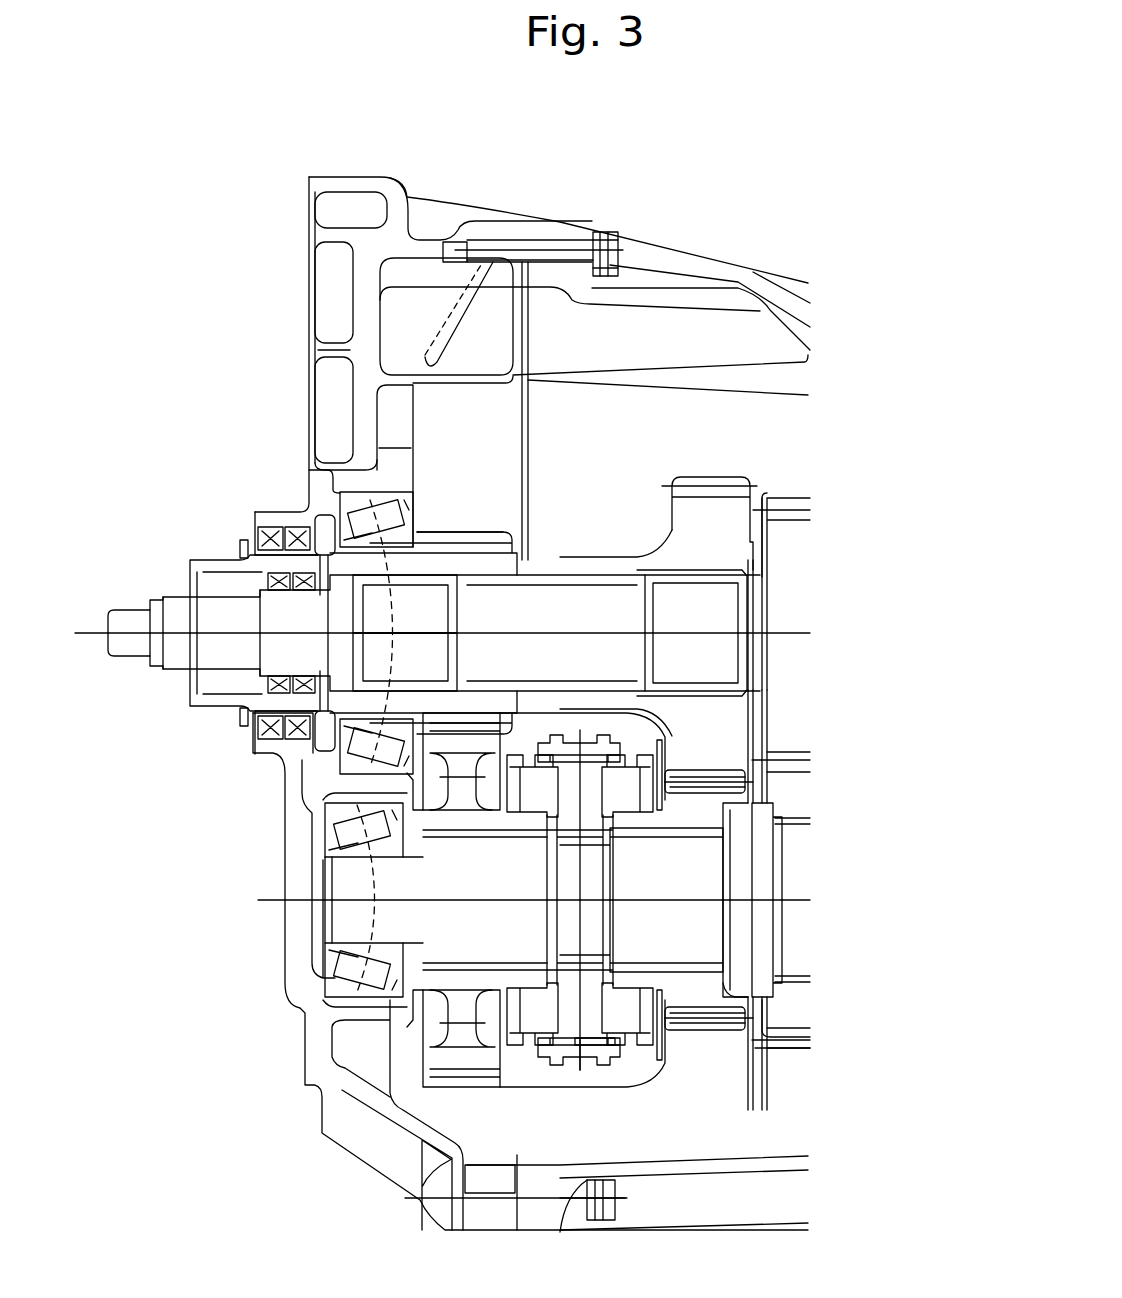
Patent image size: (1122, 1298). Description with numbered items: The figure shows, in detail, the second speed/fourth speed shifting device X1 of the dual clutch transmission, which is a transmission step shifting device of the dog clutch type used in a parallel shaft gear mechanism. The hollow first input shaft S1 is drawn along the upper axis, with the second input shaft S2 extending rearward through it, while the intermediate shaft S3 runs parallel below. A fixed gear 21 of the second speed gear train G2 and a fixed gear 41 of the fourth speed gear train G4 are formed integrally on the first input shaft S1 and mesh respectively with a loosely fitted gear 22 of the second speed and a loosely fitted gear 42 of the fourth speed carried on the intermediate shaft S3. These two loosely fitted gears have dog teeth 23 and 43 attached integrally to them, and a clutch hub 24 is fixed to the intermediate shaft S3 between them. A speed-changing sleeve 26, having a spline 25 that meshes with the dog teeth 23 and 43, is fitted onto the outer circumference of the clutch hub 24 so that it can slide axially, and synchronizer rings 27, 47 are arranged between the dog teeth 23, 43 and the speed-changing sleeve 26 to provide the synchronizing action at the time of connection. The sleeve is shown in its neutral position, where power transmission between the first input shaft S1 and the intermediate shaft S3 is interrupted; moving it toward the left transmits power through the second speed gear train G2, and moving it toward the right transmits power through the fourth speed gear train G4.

The fixed gear 21 is at (465, 542).
The loosely fitted gear 22 is at (475, 1084).
The dog teeth 23 is at (517, 1084).
The clutch hub 24 is at (600, 965).
The spline 25 is at (595, 1046).
The speed-changing sleeve 26 is at (548, 1060).
The synchronizer ring 27 is at (531, 754).
The fixed gear 41 is at (708, 480).
The loosely fitted gear 42 is at (703, 1030).
The dog teeth 43 is at (638, 1046).
The synchronizer ring 47 is at (627, 753).
The first input shaft S1 is at (567, 628).
The second input shaft S2 is at (594, 556).
The intermediate shaft S3 is at (682, 886).
The second speed gear train G2 is at (514, 526).
The fourth speed gear train G4 is at (765, 462).
The second speed/fourth speed shifting device X1 is at (587, 1122).